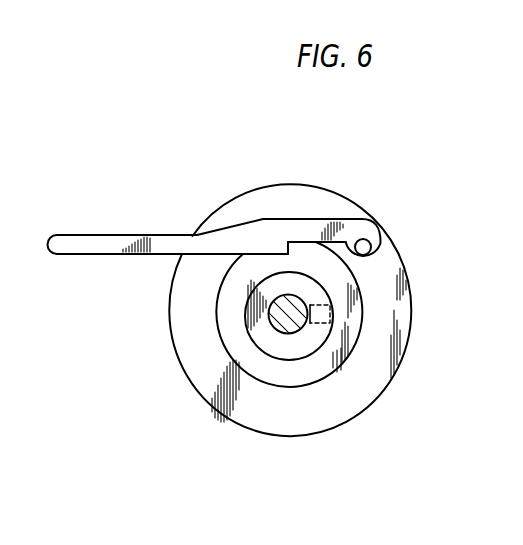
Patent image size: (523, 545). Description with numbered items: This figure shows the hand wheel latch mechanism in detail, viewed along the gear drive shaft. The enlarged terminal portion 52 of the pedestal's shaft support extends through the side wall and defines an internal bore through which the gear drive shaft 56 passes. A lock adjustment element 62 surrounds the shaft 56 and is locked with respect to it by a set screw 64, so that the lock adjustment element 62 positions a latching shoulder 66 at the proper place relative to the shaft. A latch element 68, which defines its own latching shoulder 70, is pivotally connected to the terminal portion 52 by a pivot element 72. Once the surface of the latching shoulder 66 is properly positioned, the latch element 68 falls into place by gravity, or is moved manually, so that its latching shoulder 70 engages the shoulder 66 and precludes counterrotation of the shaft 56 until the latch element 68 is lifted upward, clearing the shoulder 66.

The terminal portion 52 is at (283, 425).
The gear drive shaft 56 is at (275, 327).
The lock adjustment element 62 is at (322, 363).
The set screw 64 is at (328, 316).
The latching shoulder 66 is at (286, 250).
The latch element 68 is at (282, 226).
The latching shoulder 70 is at (304, 241).
The pivot element 72 is at (369, 240).